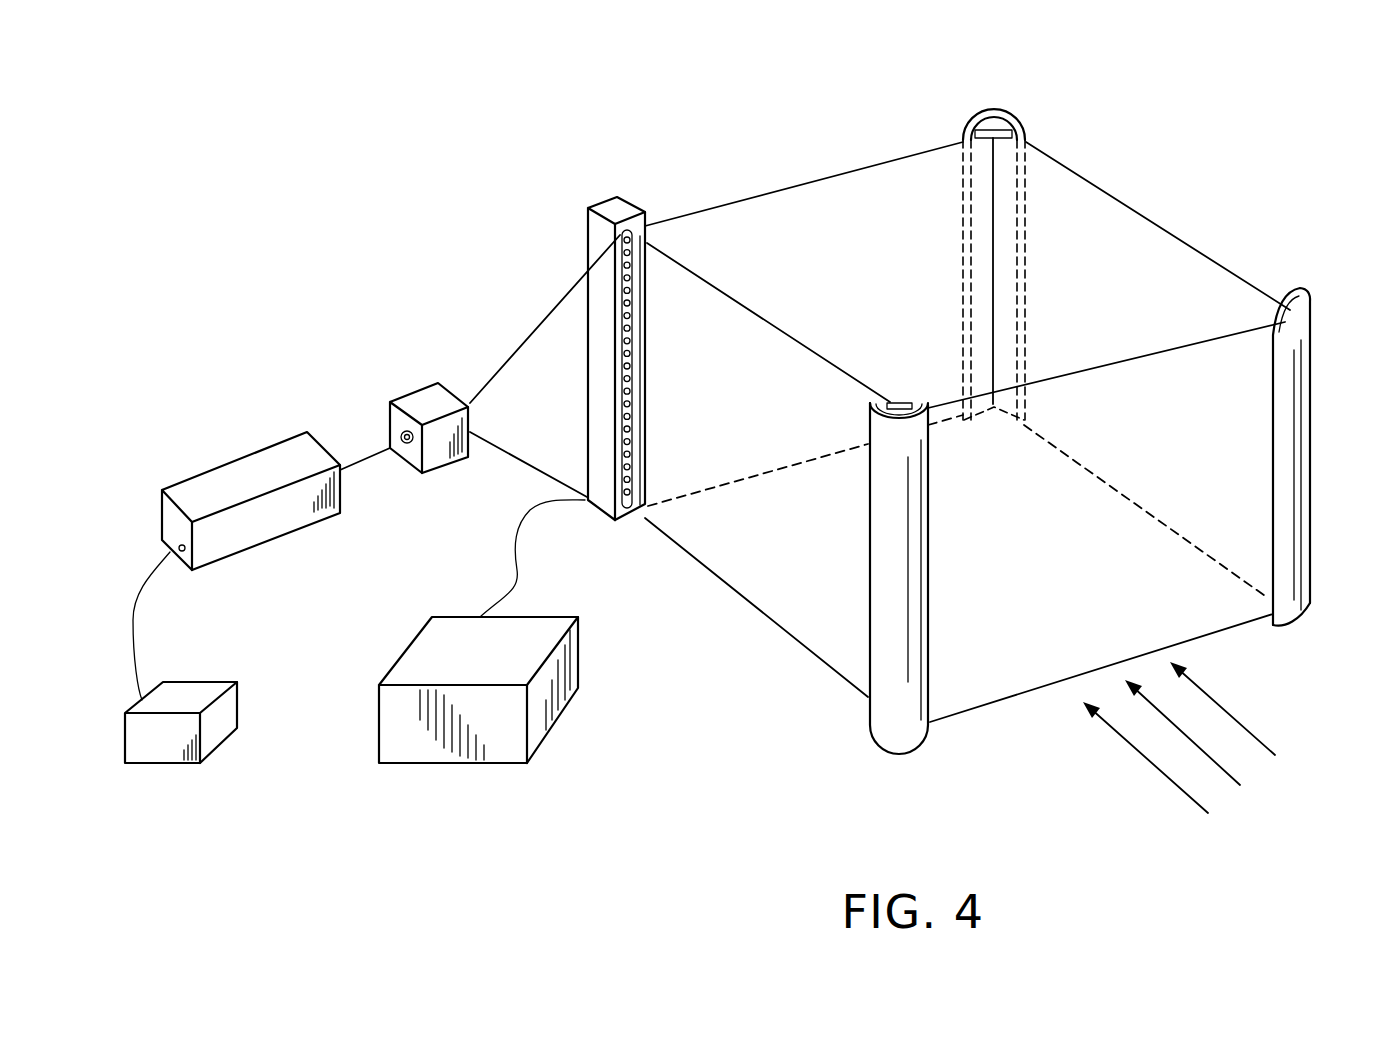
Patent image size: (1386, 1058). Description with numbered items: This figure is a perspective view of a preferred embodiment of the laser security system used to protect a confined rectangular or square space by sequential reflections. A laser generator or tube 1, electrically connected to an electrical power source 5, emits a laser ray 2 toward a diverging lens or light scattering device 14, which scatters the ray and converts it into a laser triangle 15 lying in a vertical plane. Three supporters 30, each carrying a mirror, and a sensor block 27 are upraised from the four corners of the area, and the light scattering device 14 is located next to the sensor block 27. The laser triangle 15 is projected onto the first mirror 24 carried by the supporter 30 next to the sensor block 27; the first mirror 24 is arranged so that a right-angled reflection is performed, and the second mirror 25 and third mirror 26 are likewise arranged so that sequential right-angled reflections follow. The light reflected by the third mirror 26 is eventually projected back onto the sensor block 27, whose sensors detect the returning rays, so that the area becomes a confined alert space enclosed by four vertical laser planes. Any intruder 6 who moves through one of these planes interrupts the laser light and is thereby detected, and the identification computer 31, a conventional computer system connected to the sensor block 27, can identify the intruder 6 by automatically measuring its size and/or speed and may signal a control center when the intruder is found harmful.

The laser generator or tube 1 is at (257, 463).
The laser ray 2 is at (373, 448).
The electrical power source 5 is at (227, 717).
The intruder 6 is at (1179, 740).
The diverging lens or light scattering device 14 is at (422, 397).
The laser triangle 15 is at (522, 357).
The first mirror 24 is at (997, 123).
The second mirror 25 is at (1270, 283).
The third mirror 26 is at (903, 402).
The sensor block 27 is at (598, 205).
The supporter 30 is at (1023, 142).
The identification computer 31 is at (570, 670).